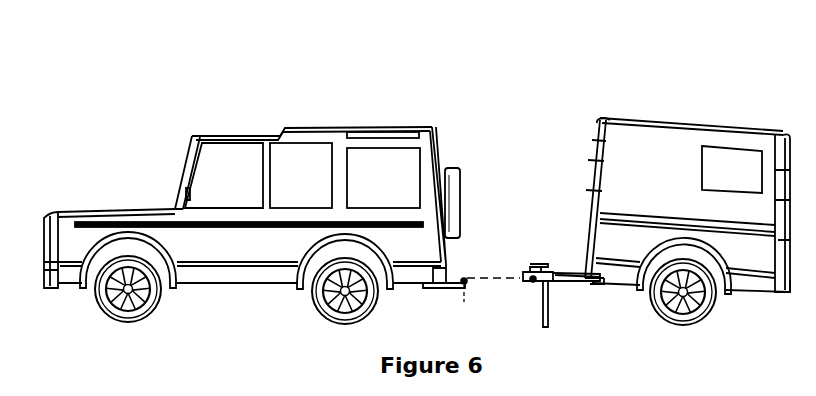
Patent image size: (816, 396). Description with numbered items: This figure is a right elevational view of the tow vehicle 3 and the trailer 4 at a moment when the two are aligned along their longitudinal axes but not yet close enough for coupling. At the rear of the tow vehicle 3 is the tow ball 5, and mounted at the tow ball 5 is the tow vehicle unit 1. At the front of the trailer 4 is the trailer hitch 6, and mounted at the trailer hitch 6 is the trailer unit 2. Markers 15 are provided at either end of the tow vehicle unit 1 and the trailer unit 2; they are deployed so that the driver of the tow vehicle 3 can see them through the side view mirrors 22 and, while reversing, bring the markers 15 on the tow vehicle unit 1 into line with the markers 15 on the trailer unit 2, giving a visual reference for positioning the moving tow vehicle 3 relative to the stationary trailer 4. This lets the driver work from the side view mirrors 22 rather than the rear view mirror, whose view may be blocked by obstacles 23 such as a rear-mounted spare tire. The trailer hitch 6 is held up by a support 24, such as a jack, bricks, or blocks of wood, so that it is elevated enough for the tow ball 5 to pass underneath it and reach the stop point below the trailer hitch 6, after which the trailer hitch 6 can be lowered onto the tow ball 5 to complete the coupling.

The tow vehicle 3 is at (387, 117).
The trailer 4 is at (676, 118).
The side view mirrors 22 is at (187, 191).
The obstacles 23 is at (453, 168).
The tow ball 5 is at (468, 278).
The trailer hitch 6 is at (528, 272).
The trailer unit 2 is at (533, 282).
The support 24 is at (549, 306).
The tow vehicle unit 1 is at (466, 284).
The markers 15 is at (462, 290).